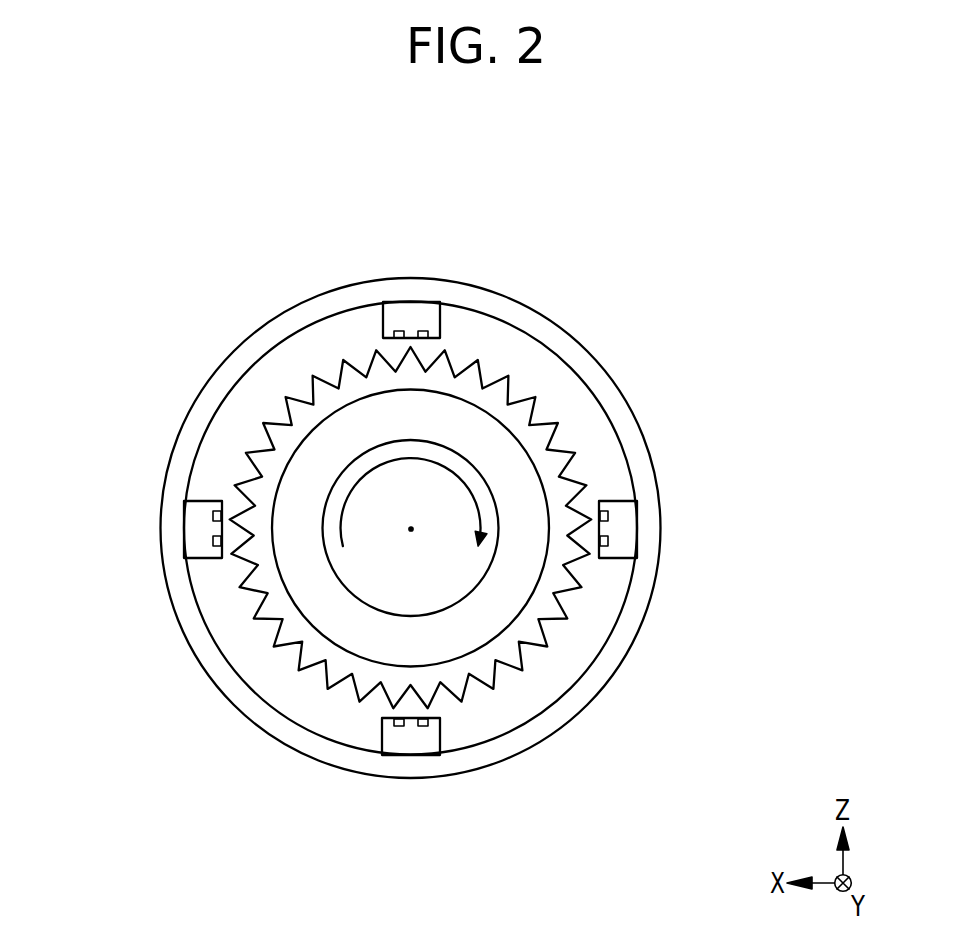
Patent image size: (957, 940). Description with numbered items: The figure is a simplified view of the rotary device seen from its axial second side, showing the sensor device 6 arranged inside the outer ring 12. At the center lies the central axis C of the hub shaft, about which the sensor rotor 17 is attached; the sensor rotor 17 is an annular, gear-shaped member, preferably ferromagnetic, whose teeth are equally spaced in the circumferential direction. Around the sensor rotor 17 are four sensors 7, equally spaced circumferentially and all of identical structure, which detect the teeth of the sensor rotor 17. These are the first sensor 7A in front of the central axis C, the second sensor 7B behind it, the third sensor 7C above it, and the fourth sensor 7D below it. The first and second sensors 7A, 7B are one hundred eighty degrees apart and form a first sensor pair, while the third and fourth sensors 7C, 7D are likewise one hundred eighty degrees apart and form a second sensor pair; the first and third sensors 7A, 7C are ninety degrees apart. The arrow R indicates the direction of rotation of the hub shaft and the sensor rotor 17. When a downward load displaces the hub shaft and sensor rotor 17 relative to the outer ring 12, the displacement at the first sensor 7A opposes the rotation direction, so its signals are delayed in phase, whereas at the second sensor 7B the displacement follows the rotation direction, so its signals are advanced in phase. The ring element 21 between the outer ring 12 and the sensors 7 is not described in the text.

The outer ring 12 is at (303, 301).
The stator ring 21 is at (217, 387).
The sensor rotor 17 is at (277, 650).
The sensors 7 is at (412, 528).
The first sensor 7A is at (185, 530).
The second sensor 7B is at (638, 530).
The third sensor 7C is at (442, 273).
The fourth sensor 7D is at (412, 755).
The sensor device 6 is at (429, 302).
The central axis C is at (409, 532).
The arrow R is at (414, 519).